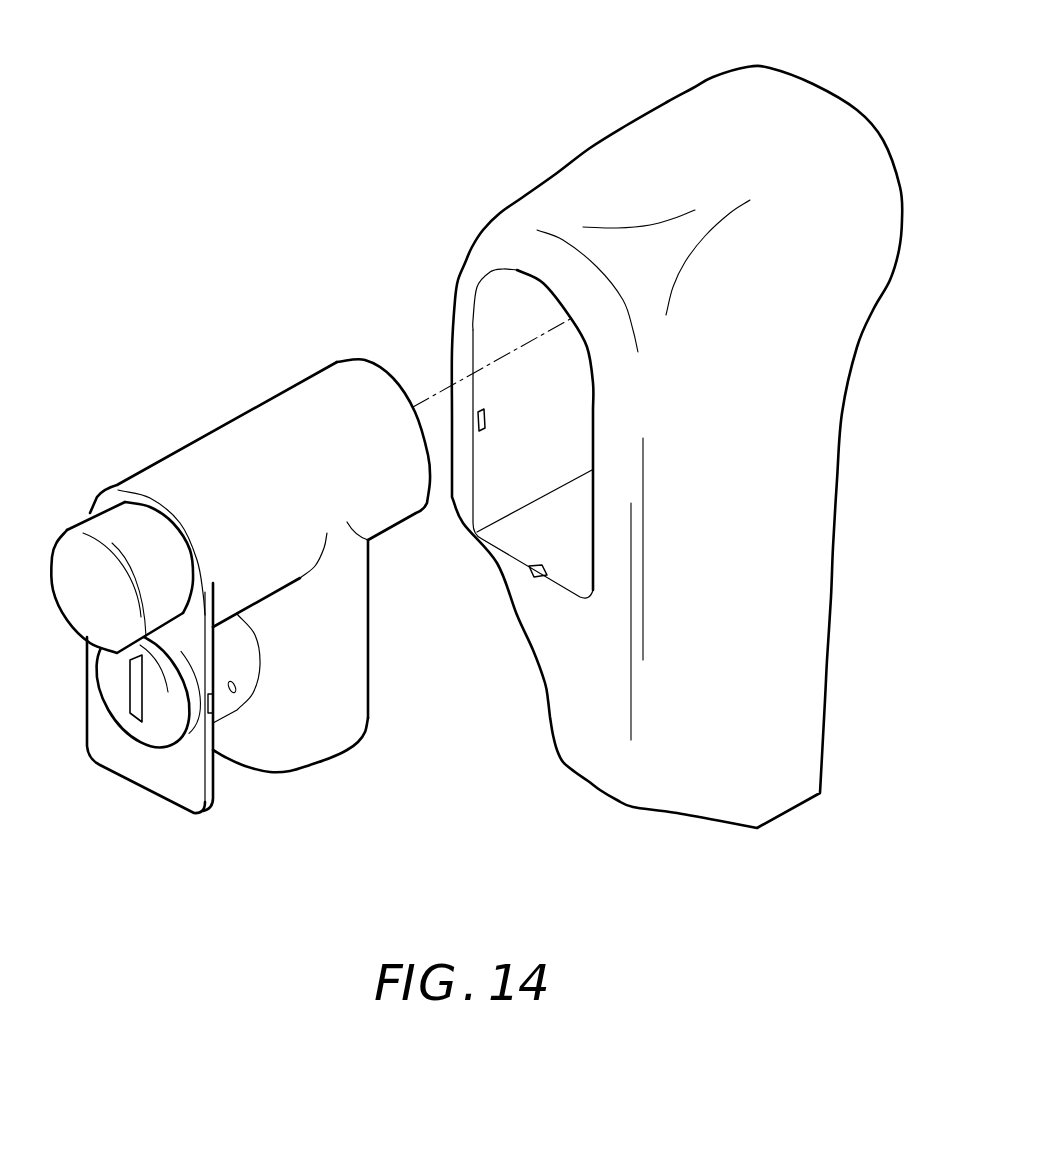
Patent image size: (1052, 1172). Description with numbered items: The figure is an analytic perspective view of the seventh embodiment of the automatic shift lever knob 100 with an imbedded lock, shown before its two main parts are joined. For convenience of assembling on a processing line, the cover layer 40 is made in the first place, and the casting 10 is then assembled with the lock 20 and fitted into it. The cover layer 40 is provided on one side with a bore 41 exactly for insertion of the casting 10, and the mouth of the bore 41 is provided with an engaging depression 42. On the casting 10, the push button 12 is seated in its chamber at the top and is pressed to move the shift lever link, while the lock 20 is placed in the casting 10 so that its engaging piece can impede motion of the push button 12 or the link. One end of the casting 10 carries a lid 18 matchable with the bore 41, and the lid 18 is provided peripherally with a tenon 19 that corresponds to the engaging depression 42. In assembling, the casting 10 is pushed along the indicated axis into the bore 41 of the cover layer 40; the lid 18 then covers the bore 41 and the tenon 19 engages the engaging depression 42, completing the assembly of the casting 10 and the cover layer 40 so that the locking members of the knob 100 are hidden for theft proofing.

The shift lever knob 100 is at (467, 48).
The casting 10 is at (237, 427).
The push button 12 is at (73, 543).
The lid 18 is at (147, 767).
The tenon 19 is at (215, 700).
The lock 20 is at (112, 680).
The cover layer 40 is at (733, 98).
The bore 41 is at (500, 322).
The engaging depression 42 is at (527, 570).